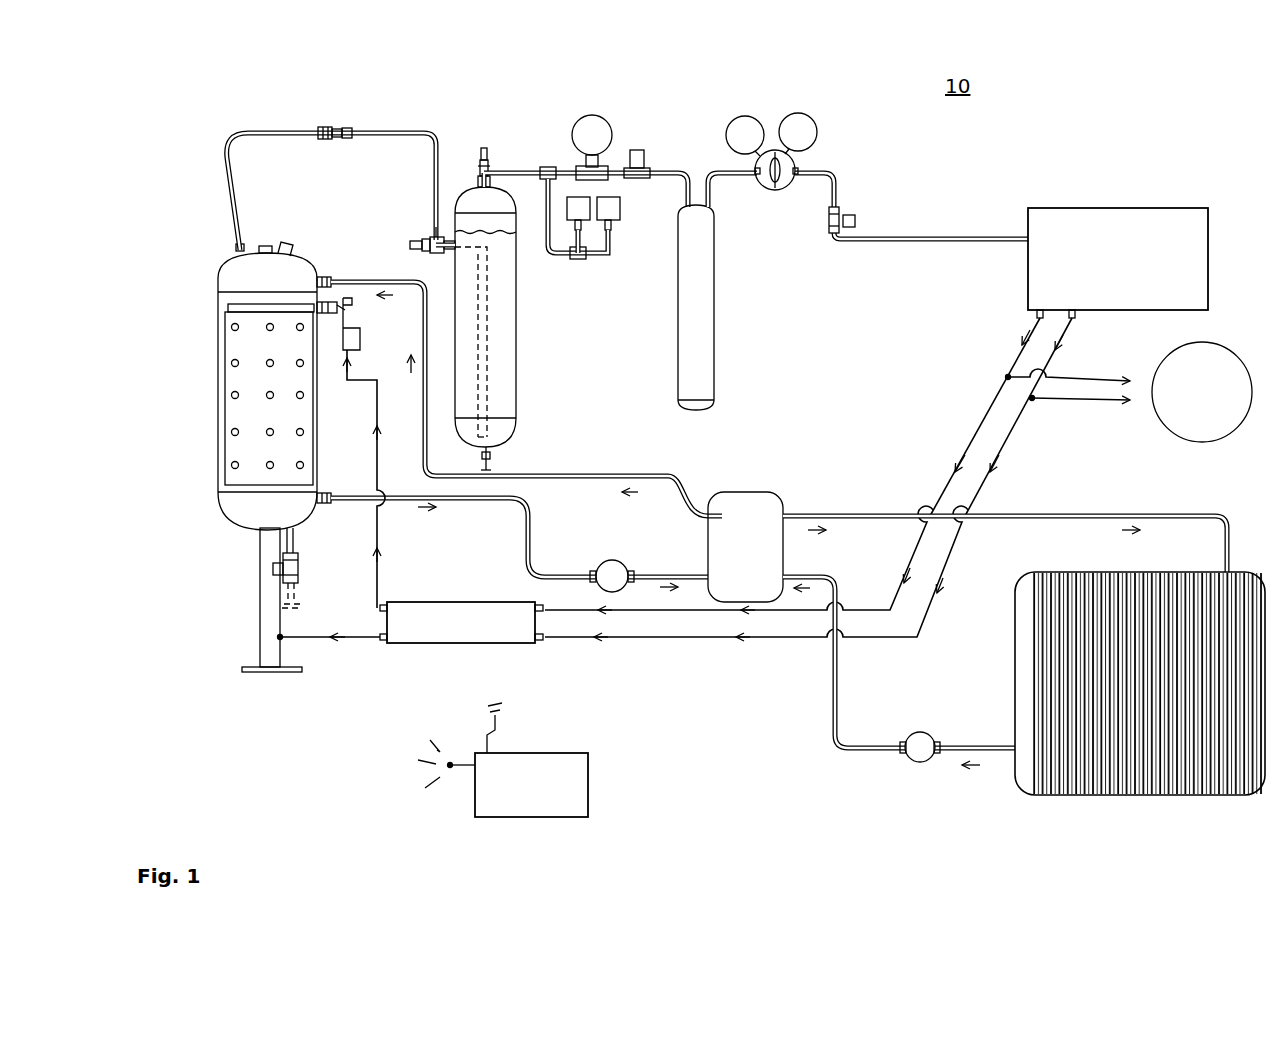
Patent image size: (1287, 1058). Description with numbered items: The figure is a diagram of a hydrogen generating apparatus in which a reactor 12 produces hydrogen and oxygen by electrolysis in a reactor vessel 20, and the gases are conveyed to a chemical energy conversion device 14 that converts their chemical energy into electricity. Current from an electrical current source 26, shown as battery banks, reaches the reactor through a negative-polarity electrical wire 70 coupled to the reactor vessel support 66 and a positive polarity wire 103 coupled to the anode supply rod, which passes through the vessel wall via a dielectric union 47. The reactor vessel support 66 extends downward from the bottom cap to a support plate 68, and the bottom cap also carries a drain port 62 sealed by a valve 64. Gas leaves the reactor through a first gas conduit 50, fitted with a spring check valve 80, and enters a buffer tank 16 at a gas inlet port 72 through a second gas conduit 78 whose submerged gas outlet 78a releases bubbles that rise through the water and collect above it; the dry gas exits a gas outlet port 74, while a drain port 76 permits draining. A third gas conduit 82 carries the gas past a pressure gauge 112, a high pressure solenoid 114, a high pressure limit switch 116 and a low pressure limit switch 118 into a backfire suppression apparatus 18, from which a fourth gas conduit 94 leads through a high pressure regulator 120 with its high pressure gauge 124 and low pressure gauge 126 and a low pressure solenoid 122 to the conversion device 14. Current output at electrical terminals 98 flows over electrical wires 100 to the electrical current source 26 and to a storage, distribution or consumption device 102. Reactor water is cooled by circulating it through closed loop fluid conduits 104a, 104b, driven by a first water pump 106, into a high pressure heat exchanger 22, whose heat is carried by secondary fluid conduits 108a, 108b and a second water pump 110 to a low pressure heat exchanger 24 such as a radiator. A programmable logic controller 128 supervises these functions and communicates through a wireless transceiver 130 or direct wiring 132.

The reactor 12 is at (188, 538).
The chemical energy conversion device 14 is at (1058, 195).
The buffer tank 16 is at (517, 380).
The backfire suppression apparatus 18 is at (667, 377).
The reactor vessel 20 is at (218, 298).
The high pressure heat exchanger 22 is at (782, 458).
The low pressure heat exchanger 24 is at (1020, 778).
The electrical current source 26 is at (511, 647).
The dielectric union 47 is at (328, 315).
The first gas conduit 50 is at (234, 137).
The drain port 62 is at (295, 537).
The valve 64 is at (297, 588).
The reactor vessel support 66 is at (260, 592).
The support plate 68 is at (245, 667).
The negative-polarity electrical wire 70 is at (345, 640).
The gas inlet port 72 is at (446, 246).
The gas outlet port 74 is at (490, 186).
The drain port 76 is at (480, 453).
The second gas conduit 78 is at (493, 308).
The submerged gas outlet 78a is at (490, 436).
The spring check valve 80 is at (335, 140).
The third gas conduit 82 is at (517, 168).
The fourth gas conduit 94 is at (836, 172).
The electrical terminals 98 is at (1010, 320).
The electrical wires 100 is at (1020, 420).
The electrical current storage or distribution or consumption device 102 is at (1163, 428).
The positive polarity wire 103 is at (380, 538).
The fluid conduit 104a is at (525, 537).
The fluid conduit 104b is at (578, 478).
The first water pump 106 is at (605, 567).
The secondary fluid conduit 108a is at (830, 700).
The secondary fluid conduit 108b is at (869, 510).
The second water pump 110 is at (914, 767).
The pressure gauge 112 is at (582, 120).
The high pressure solenoid 114 is at (639, 150).
The high pressure limit switch 116 is at (617, 207).
The low pressure limit switch 118 is at (585, 210).
The high pressure regulator 120 is at (784, 192).
The low pressure solenoid 122 is at (853, 213).
The high pressure gauge 124 is at (738, 117).
The low pressure gauge 126 is at (815, 125).
The programmable logic controller 128 is at (590, 790).
The wireless transceiver 130 is at (455, 782).
The direct wiring 132 is at (502, 728).